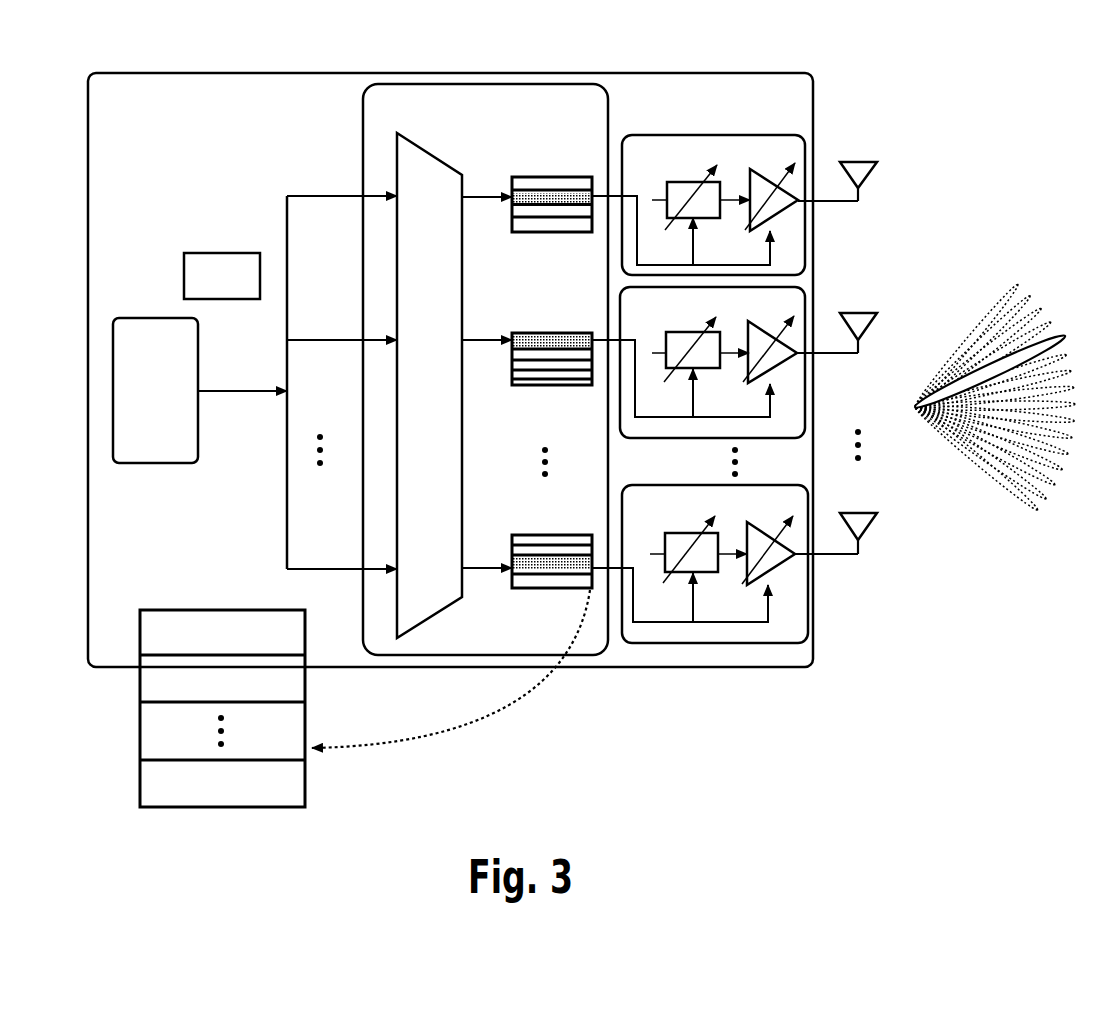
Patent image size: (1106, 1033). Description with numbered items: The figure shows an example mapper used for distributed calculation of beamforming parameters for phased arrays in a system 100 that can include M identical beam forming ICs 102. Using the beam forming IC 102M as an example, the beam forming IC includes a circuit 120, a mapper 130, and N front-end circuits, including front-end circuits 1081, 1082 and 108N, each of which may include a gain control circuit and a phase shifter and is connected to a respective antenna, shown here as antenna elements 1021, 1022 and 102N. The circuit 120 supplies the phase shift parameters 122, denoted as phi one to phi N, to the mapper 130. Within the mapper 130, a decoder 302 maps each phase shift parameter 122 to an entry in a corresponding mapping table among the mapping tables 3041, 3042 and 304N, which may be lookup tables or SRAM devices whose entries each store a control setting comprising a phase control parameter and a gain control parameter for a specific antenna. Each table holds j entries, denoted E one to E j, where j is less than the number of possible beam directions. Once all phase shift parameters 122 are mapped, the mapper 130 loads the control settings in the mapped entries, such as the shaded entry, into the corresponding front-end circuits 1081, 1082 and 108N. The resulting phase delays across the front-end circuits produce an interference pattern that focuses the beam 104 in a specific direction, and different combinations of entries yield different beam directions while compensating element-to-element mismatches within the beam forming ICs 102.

The system 100 is at (862, 826).
The beam forming IC 102M is at (150, 120).
The beam forming ICs 102 is at (888, 146).
The first antenna element 1021 is at (863, 186).
The second antenna element 1022 is at (862, 335).
The Nth antenna element 102N is at (860, 539).
The beam 104 is at (985, 372).
The front-end circuit 1081 is at (675, 167).
The second RF chain 1082 is at (673, 319).
The front-end circuit 108N is at (675, 517).
The circuit 120 is at (178, 404).
The phase shift parameter 122 is at (251, 390).
The mapper 130 is at (508, 122).
The decoder 302 is at (449, 400).
The mapping table 3041 is at (522, 232).
The mapping table 3042 is at (522, 385).
The mapping table 304N is at (522, 588).